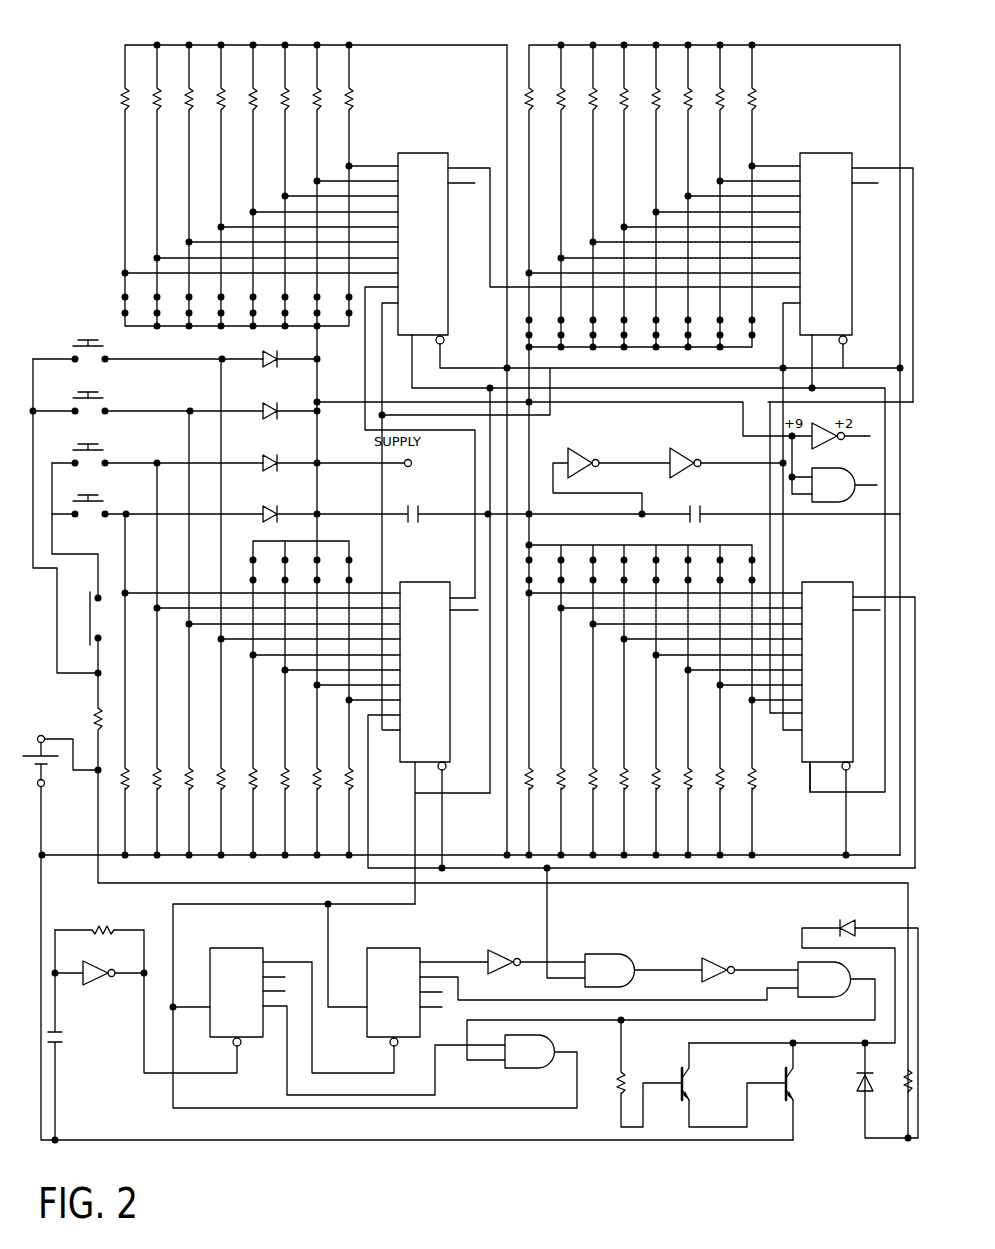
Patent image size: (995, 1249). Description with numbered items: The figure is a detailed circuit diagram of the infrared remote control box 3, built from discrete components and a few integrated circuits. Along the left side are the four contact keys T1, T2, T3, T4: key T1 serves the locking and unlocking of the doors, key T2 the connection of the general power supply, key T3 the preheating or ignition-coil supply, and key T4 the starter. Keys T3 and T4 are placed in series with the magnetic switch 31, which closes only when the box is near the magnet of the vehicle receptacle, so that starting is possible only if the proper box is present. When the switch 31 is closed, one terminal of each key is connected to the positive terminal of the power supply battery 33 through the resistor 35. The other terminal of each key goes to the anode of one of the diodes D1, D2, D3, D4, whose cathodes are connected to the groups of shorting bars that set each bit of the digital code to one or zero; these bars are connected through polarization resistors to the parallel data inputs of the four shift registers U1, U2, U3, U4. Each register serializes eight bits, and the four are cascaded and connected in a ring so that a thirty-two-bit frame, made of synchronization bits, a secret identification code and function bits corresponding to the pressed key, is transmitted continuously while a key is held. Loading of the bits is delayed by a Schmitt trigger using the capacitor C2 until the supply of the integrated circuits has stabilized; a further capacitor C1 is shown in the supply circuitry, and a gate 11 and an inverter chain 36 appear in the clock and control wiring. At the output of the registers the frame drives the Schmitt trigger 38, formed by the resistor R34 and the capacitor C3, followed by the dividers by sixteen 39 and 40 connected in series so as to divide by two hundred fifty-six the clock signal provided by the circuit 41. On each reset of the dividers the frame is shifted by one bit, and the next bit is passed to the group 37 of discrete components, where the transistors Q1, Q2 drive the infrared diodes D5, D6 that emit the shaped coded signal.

The remote control box 3 is at (103, 92).
The AND gate 11 is at (845, 480).
The magnetic switch 31 is at (90, 622).
The power supply battery 33 is at (38, 745).
The resistor 35 is at (94, 718).
The oscillator 36 is at (654, 500).
The group of discrete components 37 is at (767, 1033).
The Schmitt trigger 38 is at (461, 1021).
The divider by 16 39 is at (265, 1030).
The divider by 16 40 is at (385, 1026).
The clock circuit 41 is at (93, 980).
The shift register integrated circuit U1 is at (448, 292).
The shift register integrated circuit U2 is at (852, 268).
The shift register integrated circuit U3 is at (450, 657).
The shift register integrated circuit U4 is at (853, 662).
The diode D1 is at (262, 356).
The diode D2 is at (262, 409).
The diode D3 is at (262, 461).
The diode D4 is at (262, 512).
The infrared diode D5 is at (862, 1095).
The infrared diode D6 is at (838, 926).
The capacitor C1 is at (438, 510).
The capacitor C2 is at (706, 512).
The capacitor C3 is at (57, 1031).
The contact key T1 is at (148, 339).
The contact key T2 is at (148, 405).
The contact key T3 is at (157, 457).
The contact key T4 is at (157, 508).
The transistor Q1 is at (676, 1075).
The transistor Q2 is at (785, 1097).
The resistor R34 is at (118, 928).